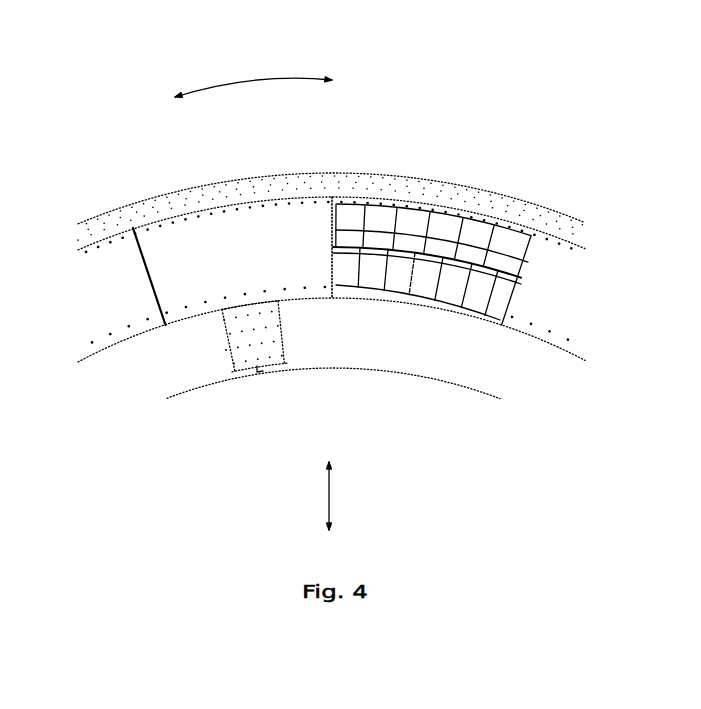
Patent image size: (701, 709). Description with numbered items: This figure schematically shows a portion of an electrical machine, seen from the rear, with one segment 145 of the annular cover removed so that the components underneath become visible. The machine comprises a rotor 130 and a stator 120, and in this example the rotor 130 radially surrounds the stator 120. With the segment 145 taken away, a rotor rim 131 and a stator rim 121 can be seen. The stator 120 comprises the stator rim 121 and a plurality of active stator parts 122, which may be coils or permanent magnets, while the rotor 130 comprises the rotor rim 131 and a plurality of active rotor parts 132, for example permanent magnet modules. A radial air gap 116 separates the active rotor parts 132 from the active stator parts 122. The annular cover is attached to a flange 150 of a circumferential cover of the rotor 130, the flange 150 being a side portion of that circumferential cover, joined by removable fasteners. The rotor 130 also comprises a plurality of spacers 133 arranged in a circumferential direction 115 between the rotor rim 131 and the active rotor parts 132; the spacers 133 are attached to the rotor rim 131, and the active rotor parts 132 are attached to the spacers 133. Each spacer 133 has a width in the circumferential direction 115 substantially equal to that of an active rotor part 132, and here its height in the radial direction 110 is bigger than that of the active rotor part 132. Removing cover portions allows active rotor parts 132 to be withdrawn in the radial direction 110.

The radial direction 110 is at (328, 492).
The circumferential direction 115 is at (250, 80).
The radial air gap 116 is at (333, 248).
The stator 120 is at (398, 312).
The stator rim 121 is at (360, 285).
The active stator part 122 is at (455, 285).
The rotor 130 is at (453, 262).
The rotor rim 131 is at (410, 206).
The active rotor part 132 is at (475, 253).
The spacer 133 is at (508, 243).
The segment 145 is at (223, 247).
The flange 150 is at (133, 215).